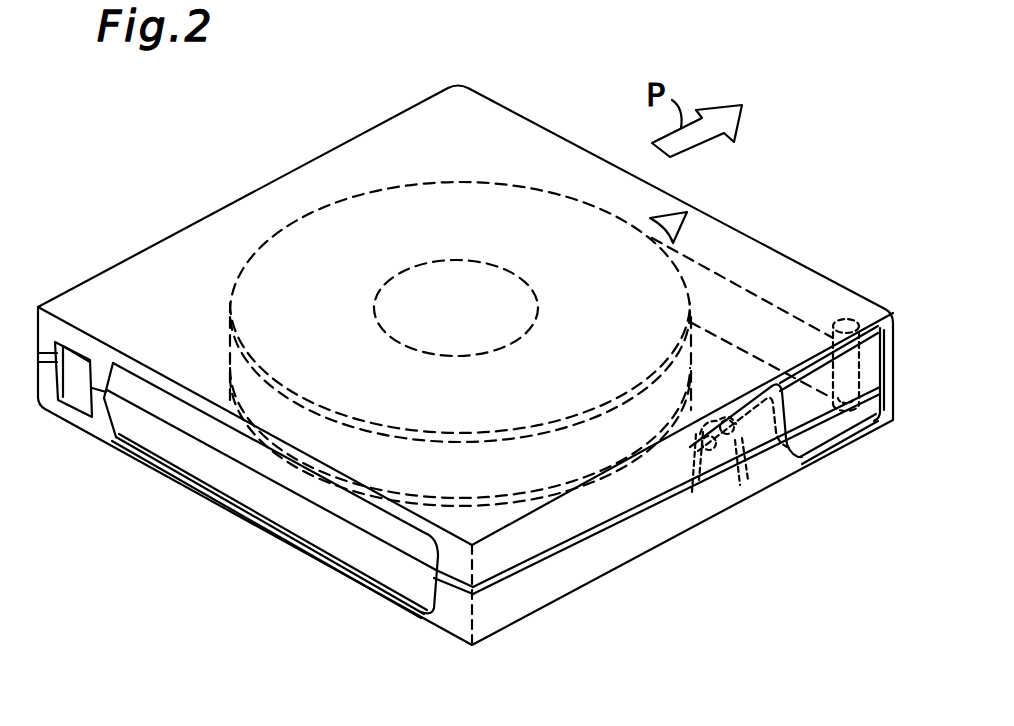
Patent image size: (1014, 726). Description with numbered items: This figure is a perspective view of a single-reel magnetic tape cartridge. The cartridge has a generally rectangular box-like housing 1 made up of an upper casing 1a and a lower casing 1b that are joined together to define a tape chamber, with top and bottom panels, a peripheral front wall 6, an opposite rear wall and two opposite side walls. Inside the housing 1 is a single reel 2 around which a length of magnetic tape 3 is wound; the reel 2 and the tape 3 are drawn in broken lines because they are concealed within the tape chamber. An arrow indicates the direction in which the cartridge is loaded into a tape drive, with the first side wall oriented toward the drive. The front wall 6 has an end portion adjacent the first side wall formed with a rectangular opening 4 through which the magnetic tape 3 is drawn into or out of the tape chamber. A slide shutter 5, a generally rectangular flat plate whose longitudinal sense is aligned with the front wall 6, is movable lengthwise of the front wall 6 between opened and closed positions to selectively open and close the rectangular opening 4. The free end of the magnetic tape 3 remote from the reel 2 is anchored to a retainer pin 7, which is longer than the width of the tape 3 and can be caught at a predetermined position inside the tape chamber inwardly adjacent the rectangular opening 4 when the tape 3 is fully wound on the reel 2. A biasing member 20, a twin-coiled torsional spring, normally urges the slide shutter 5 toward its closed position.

The housing 1 is at (550, 120).
The upper casing 1a is at (258, 200).
The lower casing 1b is at (187, 488).
The reel 2 is at (445, 182).
The magnetic tape 3 is at (737, 290).
The rectangular opening 4 is at (820, 440).
The slide shutter 5 is at (805, 405).
The front wall 6 is at (615, 563).
The retainer pin 7 is at (847, 319).
The biasing member 20 is at (722, 482).